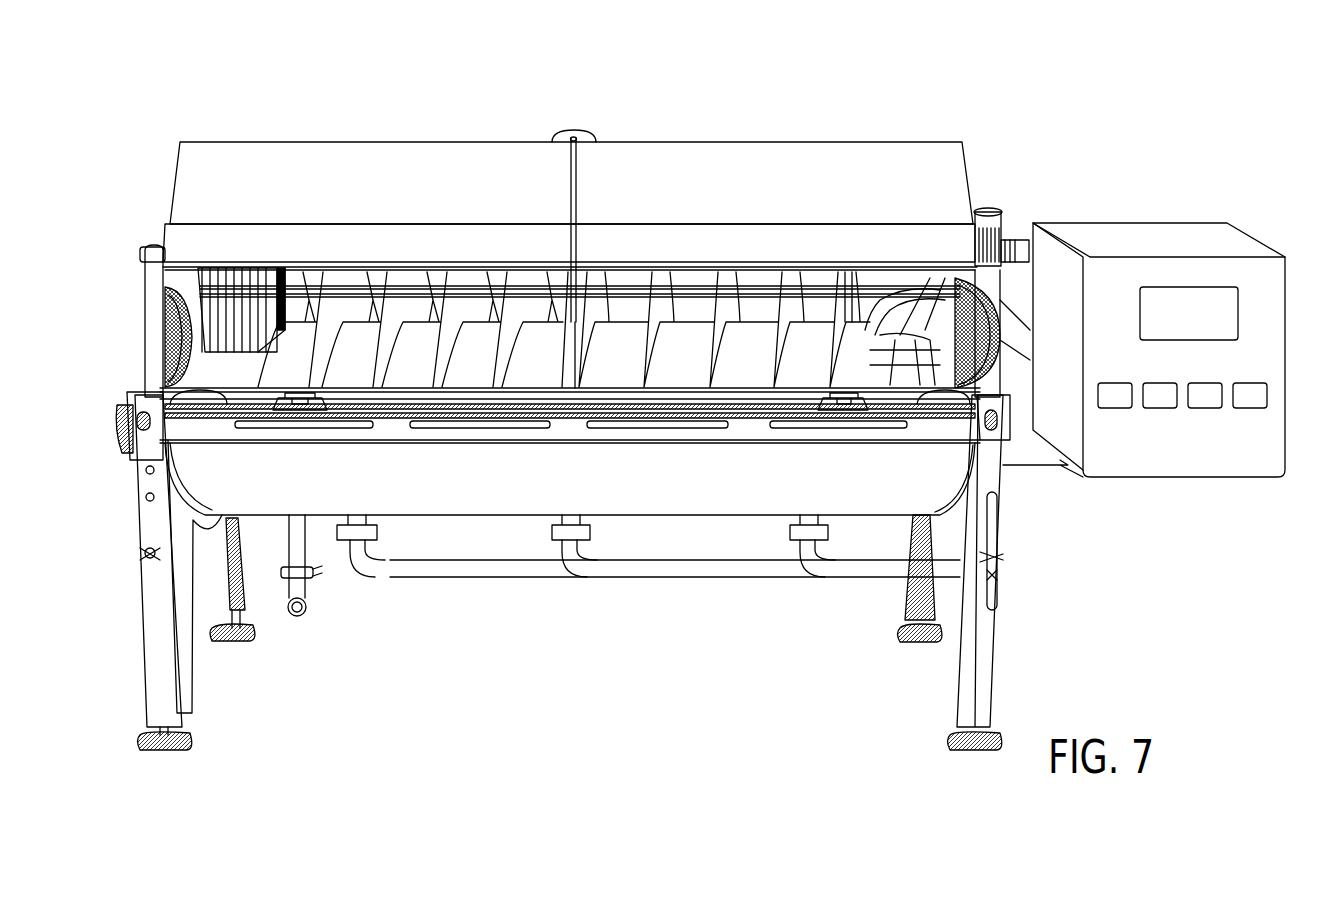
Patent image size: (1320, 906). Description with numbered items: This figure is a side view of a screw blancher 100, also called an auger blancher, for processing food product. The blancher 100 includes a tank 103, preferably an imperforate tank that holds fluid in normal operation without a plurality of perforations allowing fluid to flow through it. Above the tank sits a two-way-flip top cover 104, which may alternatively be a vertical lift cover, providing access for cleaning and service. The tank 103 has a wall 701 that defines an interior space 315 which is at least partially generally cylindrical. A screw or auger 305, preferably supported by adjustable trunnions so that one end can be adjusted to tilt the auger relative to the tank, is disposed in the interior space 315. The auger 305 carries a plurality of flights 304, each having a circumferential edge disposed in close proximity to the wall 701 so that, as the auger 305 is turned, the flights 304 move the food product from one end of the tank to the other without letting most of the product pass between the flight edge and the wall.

The screw blancher 100 is at (975, 85).
The tank 103 is at (675, 498).
The two-way-flip top cover 104 is at (720, 167).
The flights 304 is at (330, 293).
The screw or auger 305 is at (485, 340).
The interior space 315 is at (731, 374).
The wall 701 is at (413, 485).